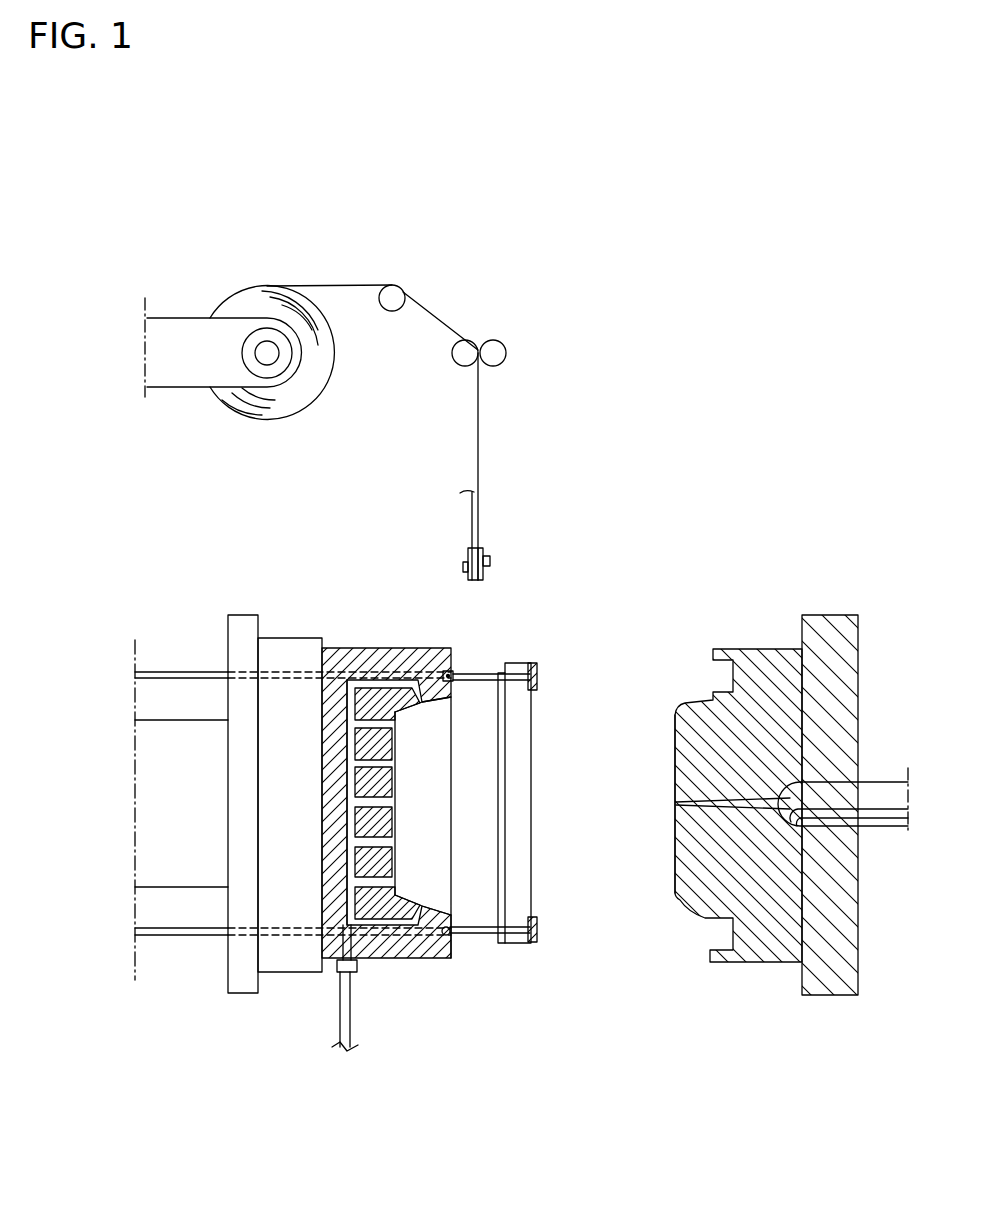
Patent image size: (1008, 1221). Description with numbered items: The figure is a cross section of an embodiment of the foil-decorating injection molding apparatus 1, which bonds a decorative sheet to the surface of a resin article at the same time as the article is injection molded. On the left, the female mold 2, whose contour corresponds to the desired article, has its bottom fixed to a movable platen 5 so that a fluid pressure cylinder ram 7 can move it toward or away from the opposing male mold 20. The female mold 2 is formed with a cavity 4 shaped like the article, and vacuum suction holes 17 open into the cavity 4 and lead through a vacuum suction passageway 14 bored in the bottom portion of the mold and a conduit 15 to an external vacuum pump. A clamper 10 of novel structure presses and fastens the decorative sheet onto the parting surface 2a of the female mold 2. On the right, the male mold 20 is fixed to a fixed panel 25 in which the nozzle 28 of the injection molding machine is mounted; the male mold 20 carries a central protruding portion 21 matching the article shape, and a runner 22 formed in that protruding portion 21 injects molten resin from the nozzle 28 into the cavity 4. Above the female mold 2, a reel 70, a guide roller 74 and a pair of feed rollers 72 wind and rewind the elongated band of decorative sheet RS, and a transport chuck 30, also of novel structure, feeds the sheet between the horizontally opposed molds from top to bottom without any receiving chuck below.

The foil-decorating injection molding apparatus 1 is at (596, 376).
The decorative sheet RS is at (254, 302).
The reel 70 is at (171, 372).
The guide roller 74 is at (392, 287).
The feed rollers 72 is at (465, 340).
The transport chuck 30 is at (497, 549).
The fluid pressure cylinder ram 7 is at (182, 732).
The movable platen 5 is at (287, 650).
The female mold 2 is at (384, 645).
The vacuum suction holes 17 is at (352, 775).
The vacuum suction passageway 14 is at (347, 838).
The cavity 4 is at (401, 778).
The conduit 15 is at (343, 1017).
The parting surface 2a is at (452, 950).
The clamper 10 is at (545, 700).
The fixed panel 25 is at (831, 625).
The male mold 20 is at (759, 646).
The protruding portion 21 is at (675, 864).
The runner 22 is at (675, 806).
The nozzle 28 is at (878, 818).